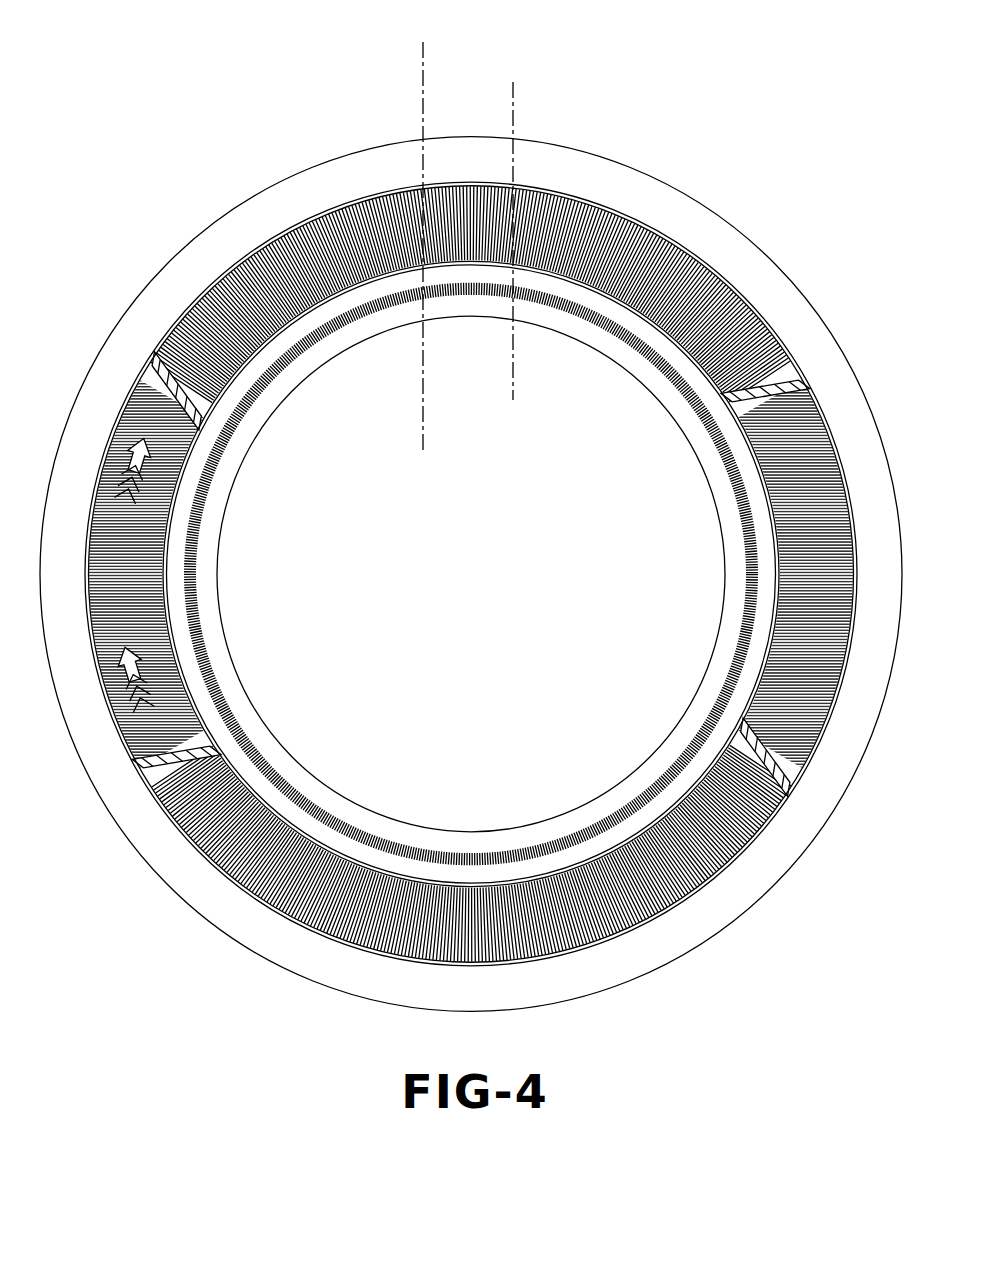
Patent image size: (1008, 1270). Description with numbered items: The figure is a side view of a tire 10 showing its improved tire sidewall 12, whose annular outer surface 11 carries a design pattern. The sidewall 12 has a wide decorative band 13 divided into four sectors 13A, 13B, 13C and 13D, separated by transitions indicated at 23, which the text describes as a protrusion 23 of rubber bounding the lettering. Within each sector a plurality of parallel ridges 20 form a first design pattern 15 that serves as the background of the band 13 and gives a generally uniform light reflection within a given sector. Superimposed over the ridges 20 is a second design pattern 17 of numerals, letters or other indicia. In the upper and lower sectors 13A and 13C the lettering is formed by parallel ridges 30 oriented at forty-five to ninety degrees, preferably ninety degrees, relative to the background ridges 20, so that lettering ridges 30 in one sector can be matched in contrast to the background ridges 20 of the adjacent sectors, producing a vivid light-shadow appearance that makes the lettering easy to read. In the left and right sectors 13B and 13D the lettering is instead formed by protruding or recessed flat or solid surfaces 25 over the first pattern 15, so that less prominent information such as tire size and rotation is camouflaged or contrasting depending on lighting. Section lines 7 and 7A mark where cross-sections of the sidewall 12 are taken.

The section line 7- 7 is at (548, 400).
The section line 7A- 7A is at (462, 452).
The tire 10 is at (172, 916).
The annular outer surface 11 is at (180, 278).
The tire sidewall 12 is at (263, 933).
The wide decorative band 13 is at (471, 567).
The first sector 13A is at (277, 248).
The second sector 13B is at (790, 438).
The third sector 13C is at (725, 857).
The fourth sector 13D is at (170, 720).
The first design pattern 15 is at (702, 287).
The second design pattern 17 is at (757, 338).
The ridges 20 is at (163, 452).
The protrusion 23 is at (155, 370).
The flat or solid surfaces 25 is at (800, 627).
The ridges of the second pattern 30 is at (585, 223).